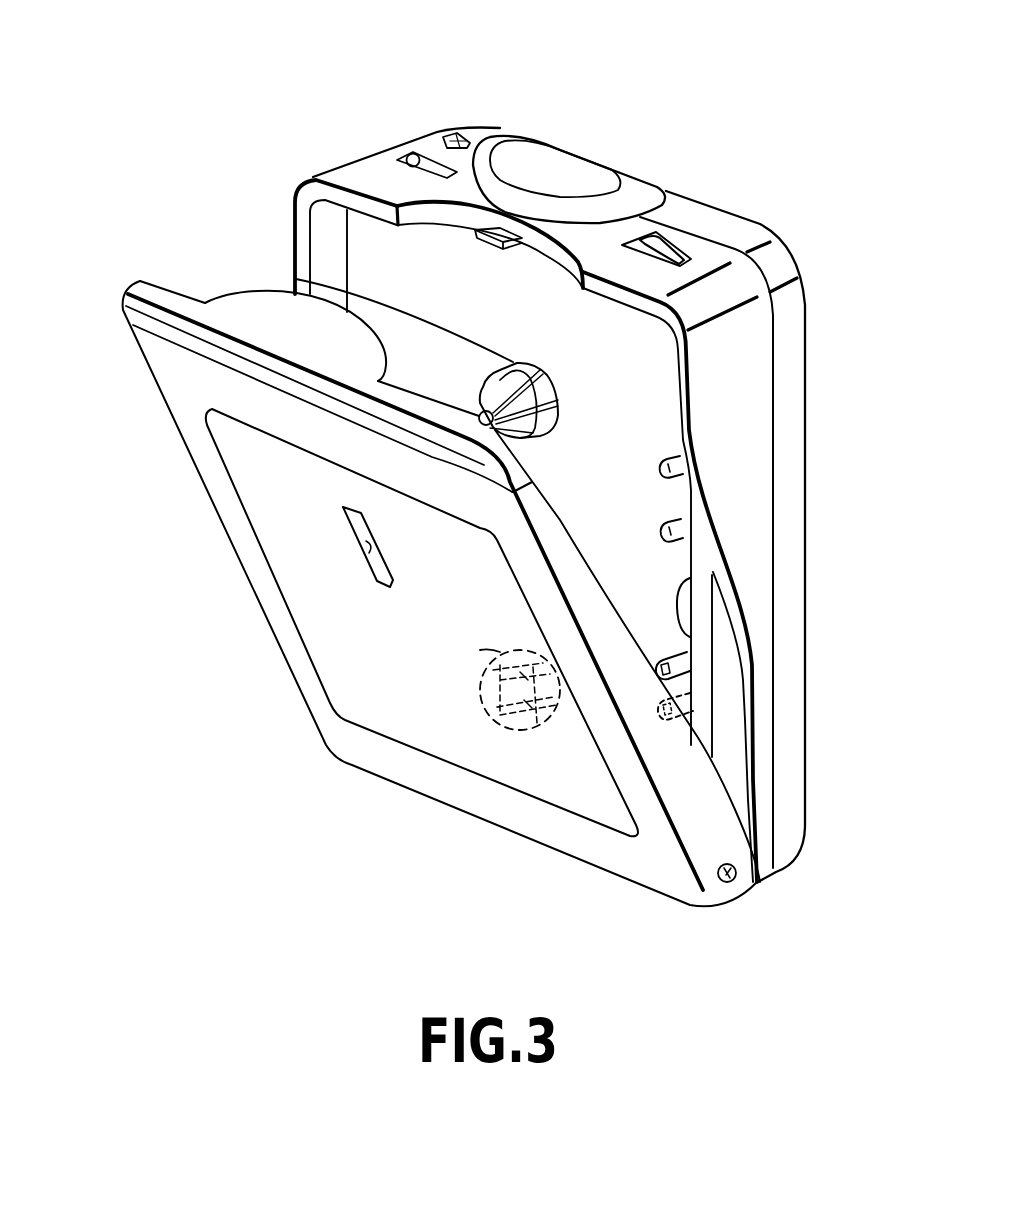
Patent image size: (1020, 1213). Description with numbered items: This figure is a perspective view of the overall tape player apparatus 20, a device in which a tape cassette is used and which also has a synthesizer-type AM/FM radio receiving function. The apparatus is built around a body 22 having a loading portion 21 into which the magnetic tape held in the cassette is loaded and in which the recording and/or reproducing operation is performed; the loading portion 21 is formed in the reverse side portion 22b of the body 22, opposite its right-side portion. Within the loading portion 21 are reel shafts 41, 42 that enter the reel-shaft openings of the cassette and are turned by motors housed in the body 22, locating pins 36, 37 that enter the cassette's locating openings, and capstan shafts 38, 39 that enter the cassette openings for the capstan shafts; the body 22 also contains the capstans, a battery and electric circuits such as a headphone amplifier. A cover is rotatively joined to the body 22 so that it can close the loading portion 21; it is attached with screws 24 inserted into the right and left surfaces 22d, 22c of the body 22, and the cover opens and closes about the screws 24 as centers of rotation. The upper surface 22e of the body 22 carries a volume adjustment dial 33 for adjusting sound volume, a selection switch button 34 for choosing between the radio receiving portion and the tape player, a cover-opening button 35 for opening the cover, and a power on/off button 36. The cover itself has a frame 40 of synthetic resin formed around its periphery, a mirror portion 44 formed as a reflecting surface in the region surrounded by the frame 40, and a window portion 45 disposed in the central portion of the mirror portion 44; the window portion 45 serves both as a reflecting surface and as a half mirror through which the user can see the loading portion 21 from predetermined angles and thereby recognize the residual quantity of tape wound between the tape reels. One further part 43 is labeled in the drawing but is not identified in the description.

The tape player apparatus 20 is at (601, 48).
The loading portion 21 is at (640, 377).
The body 22 is at (793, 790).
The reverse side portion 22b is at (367, 253).
The left surface 22c is at (747, 395).
The right surface 22d is at (288, 198).
The upper surface 22e is at (737, 232).
The screws 24 is at (723, 883).
The volume adjustment dial 33 is at (662, 238).
The selection switch button 34 is at (413, 155).
The cover-opening button 35 is at (585, 185).
The power on/off button 36 is at (457, 133).
The locating pin 37 is at (680, 668).
The capstan shaft 38 is at (687, 710).
The capstan shaft 39 is at (683, 465).
The frame 40 is at (187, 407).
The reel shaft 41 is at (685, 605).
The reel shaft 42 is at (500, 652).
The dome bump on lid 43 is at (296, 279).
The mirror portion 44 is at (270, 528).
The window portion 45 is at (366, 545).